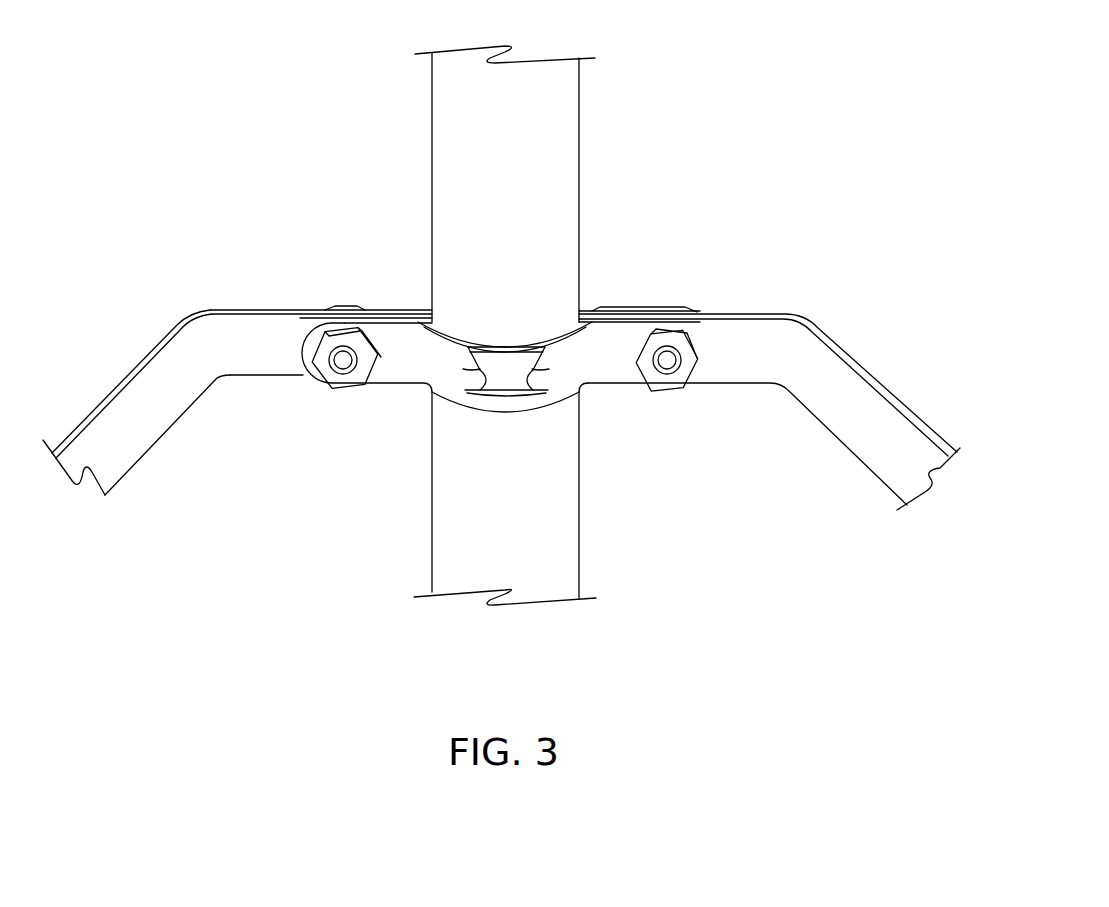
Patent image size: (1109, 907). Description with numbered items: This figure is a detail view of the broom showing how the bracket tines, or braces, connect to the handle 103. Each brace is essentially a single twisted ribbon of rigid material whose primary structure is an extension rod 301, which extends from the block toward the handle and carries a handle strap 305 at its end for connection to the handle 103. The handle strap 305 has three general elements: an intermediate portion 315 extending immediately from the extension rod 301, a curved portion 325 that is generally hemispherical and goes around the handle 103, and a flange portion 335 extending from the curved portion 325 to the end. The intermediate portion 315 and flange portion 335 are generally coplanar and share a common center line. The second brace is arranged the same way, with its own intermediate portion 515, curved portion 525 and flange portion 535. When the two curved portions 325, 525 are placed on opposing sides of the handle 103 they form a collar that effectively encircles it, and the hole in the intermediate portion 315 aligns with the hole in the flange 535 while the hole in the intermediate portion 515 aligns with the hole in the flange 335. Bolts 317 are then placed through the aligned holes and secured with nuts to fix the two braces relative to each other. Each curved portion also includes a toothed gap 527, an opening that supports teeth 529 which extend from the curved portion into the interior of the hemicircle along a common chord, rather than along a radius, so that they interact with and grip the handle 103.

The handle 103 is at (567, 96).
The extension rod 301 is at (135, 388).
The handle strap 305 is at (252, 310).
The intermediate portion 315 is at (302, 310).
The curved portion 325 is at (582, 306).
The flange portion 335 is at (660, 307).
The bolt 317 is at (336, 374).
The flange portion 535 is at (388, 368).
The intermediate portion 515 is at (613, 383).
The teeth 529 is at (478, 352).
The curved portion 525 is at (478, 384).
The toothed gap 527 is at (505, 380).